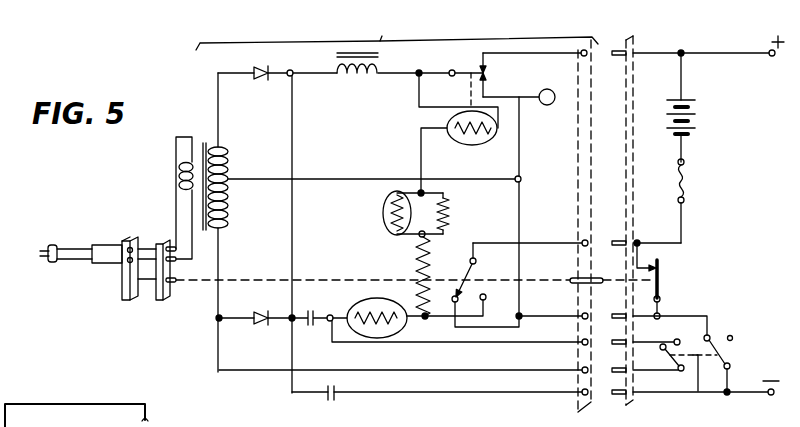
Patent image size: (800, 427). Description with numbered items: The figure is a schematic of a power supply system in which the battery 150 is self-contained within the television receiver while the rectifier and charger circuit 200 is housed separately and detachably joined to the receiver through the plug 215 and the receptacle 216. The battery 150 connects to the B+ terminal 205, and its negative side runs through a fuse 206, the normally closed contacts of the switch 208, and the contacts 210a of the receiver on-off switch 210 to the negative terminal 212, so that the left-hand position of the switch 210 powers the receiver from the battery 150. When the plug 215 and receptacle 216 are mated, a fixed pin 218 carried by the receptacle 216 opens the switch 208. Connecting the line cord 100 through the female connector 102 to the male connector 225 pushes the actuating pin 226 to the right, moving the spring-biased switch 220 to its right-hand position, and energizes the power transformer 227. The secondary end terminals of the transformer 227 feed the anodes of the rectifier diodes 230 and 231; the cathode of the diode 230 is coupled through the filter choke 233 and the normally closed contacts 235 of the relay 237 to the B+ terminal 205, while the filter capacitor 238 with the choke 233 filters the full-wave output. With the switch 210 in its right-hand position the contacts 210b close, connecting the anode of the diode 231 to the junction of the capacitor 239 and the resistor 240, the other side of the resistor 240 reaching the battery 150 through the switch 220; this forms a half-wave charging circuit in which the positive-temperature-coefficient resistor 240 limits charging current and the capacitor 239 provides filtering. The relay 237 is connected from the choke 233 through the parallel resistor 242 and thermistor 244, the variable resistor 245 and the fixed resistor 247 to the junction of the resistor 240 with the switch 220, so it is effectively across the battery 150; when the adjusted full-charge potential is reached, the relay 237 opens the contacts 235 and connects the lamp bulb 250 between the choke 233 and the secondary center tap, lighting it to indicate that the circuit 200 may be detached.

The line cord 100 is at (90, 250).
The female connector 102 is at (132, 240).
The rectifier and charger circuit 200 is at (381, 27).
The B+ terminal 205 is at (754, 39).
The fuse 206 is at (688, 180).
The switch 208 is at (718, 240).
The receiver on-off switch 210 is at (698, 391).
The switch contacts 210a is at (714, 343).
The switch contacts 210b is at (668, 356).
The negative terminal 212 is at (768, 395).
The plug 215 is at (628, 100).
The receptacle 216 is at (578, 130).
The fixed pin 218 is at (572, 278).
The switch 220 is at (470, 282).
The male connector 225 is at (152, 244).
The actuating pin 226 is at (147, 290).
The power transformer 227 is at (205, 140).
The rectifier diode 230 is at (262, 79).
The rectifier diode 231 is at (262, 323).
The filter choke 233 is at (364, 83).
The relay contacts 235 is at (488, 74).
The relay 237 is at (472, 143).
The filter capacitor 238 is at (337, 400).
The capacitor 239 is at (328, 300).
The resistor 240 is at (368, 338).
The resistor 242 is at (448, 210).
The thermistor 244 is at (386, 213).
The variable resistor 245 is at (435, 247).
The fixed resistor 247 is at (426, 319).
The lamp bulb 250 is at (549, 106).
The battery 150 is at (684, 100).